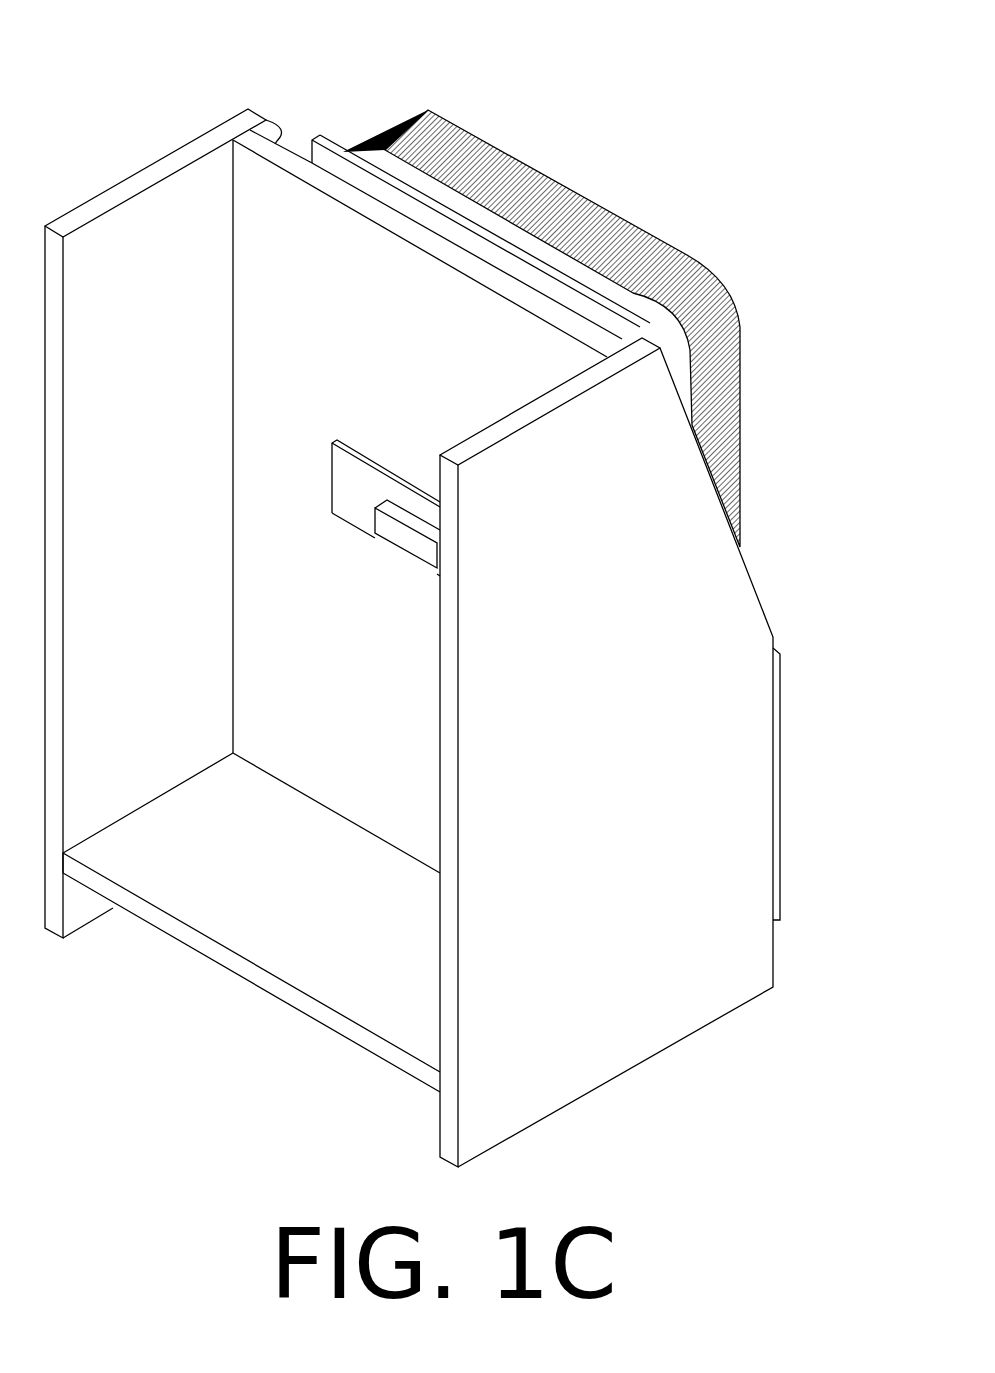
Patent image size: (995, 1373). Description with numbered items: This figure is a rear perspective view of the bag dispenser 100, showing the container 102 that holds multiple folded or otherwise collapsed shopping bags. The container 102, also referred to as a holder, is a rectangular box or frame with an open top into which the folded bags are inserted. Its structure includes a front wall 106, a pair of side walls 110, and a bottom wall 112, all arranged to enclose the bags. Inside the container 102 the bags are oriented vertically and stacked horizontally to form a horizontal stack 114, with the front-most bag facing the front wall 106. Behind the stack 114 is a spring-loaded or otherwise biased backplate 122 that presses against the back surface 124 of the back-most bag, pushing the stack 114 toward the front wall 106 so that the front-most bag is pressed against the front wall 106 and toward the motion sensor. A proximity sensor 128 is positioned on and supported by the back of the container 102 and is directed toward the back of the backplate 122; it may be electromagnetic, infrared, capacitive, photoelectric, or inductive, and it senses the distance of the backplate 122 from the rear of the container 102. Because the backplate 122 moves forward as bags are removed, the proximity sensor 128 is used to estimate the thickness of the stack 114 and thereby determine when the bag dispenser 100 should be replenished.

The bag dispenser 100 is at (103, 25).
The container 102 is at (683, 1030).
The front wall 106 is at (778, 743).
The side walls 110 is at (130, 182).
The bottom wall 112 is at (240, 963).
The horizontal stack 114 is at (570, 193).
The spring-loaded backplate 122 is at (329, 143).
The back surface 124 is at (398, 170).
The proximity sensor 128 is at (392, 528).